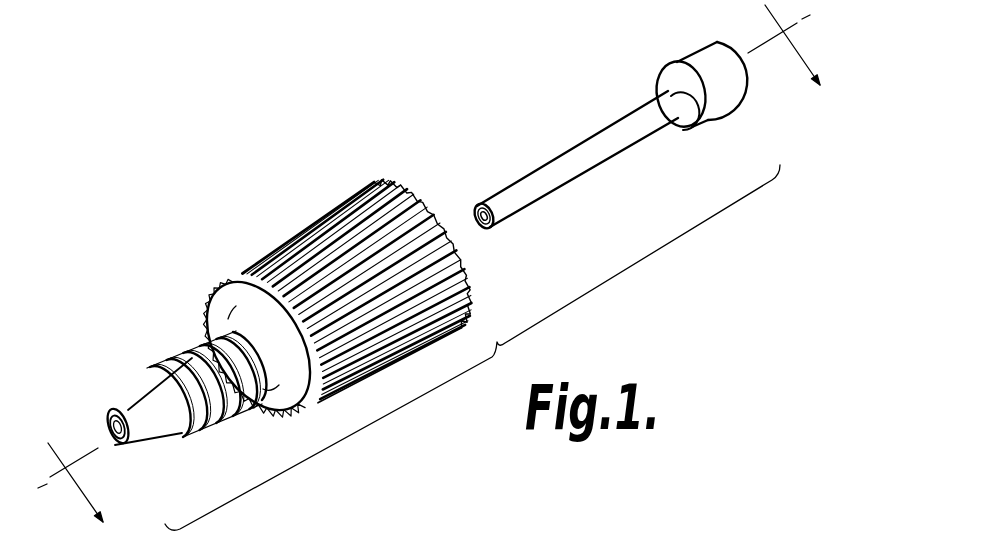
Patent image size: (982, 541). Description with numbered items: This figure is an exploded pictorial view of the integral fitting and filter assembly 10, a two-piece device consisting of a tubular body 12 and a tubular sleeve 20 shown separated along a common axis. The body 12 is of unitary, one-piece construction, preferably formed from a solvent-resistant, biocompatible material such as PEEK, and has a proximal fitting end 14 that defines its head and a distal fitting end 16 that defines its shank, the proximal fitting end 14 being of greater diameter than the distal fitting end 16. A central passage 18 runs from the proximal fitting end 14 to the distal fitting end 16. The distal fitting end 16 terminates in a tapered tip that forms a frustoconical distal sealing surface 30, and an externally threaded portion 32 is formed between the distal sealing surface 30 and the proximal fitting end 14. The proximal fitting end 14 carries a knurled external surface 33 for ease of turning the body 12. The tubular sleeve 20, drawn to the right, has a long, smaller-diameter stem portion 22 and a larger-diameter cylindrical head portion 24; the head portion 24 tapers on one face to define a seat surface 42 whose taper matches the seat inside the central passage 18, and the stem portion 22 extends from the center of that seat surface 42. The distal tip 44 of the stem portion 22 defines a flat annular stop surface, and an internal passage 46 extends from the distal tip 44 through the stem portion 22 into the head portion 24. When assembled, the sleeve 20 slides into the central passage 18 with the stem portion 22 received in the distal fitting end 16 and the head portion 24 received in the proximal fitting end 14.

The integral fitting and filter assembly 10 is at (127, 115).
The tubular body 12 is at (308, 260).
The proximal fitting end 14 is at (396, 378).
The distal fitting end 16 is at (211, 432).
The central passage 18 is at (110, 431).
The tubular sleeve 20 is at (596, 147).
The stem portion 22 is at (562, 190).
The head portion 24 is at (699, 100).
The distal sealing surface 30 is at (116, 382).
The externally threaded portion 32 is at (178, 352).
The knurled external surface 33 is at (256, 260).
The seat surface 42 is at (686, 131).
The distal tip 44 is at (483, 210).
The internal passage 46 is at (486, 228).